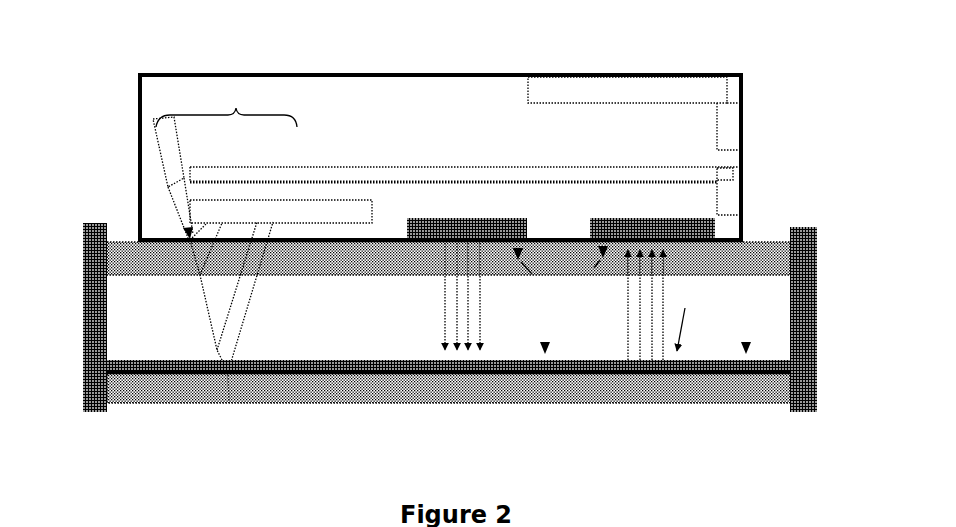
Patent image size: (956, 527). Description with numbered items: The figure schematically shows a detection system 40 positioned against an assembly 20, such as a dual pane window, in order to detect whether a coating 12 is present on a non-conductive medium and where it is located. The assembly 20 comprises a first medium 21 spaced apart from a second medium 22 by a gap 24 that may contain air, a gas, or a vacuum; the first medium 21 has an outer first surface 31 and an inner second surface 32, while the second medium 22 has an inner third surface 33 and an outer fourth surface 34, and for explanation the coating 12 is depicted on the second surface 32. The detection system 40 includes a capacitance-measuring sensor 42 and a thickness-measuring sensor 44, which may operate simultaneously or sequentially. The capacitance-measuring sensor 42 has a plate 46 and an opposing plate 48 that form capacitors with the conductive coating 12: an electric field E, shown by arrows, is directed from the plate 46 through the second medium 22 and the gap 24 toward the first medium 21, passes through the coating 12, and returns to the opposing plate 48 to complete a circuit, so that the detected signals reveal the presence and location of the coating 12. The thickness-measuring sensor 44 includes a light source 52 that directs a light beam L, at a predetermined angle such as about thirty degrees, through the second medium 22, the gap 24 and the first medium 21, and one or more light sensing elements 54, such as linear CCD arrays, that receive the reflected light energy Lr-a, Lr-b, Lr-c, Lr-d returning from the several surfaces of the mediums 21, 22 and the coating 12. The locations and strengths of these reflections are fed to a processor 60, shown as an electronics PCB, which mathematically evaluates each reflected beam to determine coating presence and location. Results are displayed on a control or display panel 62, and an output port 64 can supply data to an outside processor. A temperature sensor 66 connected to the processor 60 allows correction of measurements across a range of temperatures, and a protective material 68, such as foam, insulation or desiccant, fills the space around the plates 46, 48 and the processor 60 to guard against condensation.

The detection system 40 is at (236, 56).
The control or display panel 62 is at (700, 77).
The output port 64 is at (727, 123).
The temperature sensor 66 is at (733, 193).
The protective material 68 is at (676, 145).
The thickness-measuring sensor 44 is at (226, 120).
The light source 52 is at (148, 146).
The light sensing element 54 is at (289, 194).
The processor 60 is at (313, 170).
The capacitance-measuring sensor 42 is at (561, 189).
The opposing plate 48 is at (485, 218).
The plate 46 is at (652, 211).
The third surface 33 is at (749, 257).
The fourth surface 34 is at (783, 232).
The light beam L is at (178, 217).
The reflected light energy Lr-a is at (167, 243).
The reflected light energy Lr-b is at (195, 264).
The reflected light energy Lr-c is at (238, 308).
The reflected light energy Lr-d is at (238, 332).
The coating 12 is at (349, 357).
The second medium 22 is at (381, 262).
The first medium 21 is at (357, 400).
The assembly 20 is at (186, 421).
The first surface 31 is at (632, 405).
The second surface 32 is at (683, 381).
The gap 24 is at (777, 285).
The electric field E is at (598, 301).